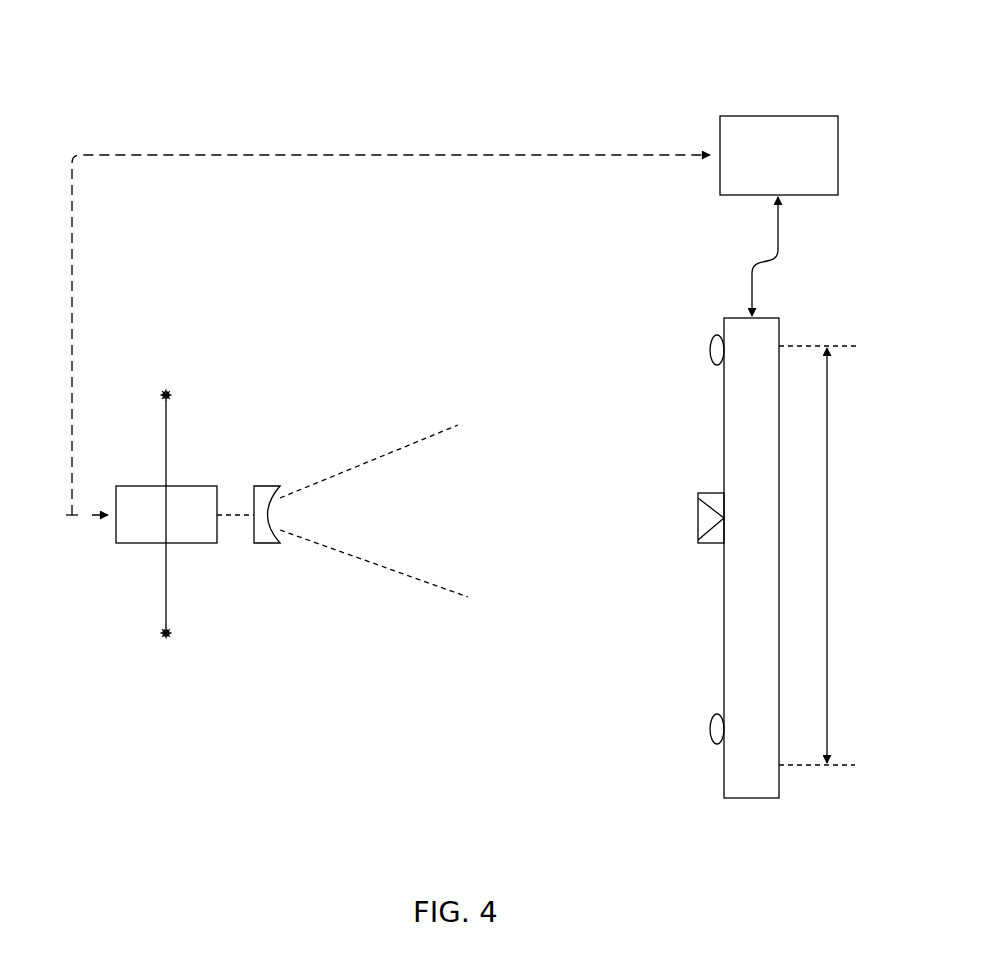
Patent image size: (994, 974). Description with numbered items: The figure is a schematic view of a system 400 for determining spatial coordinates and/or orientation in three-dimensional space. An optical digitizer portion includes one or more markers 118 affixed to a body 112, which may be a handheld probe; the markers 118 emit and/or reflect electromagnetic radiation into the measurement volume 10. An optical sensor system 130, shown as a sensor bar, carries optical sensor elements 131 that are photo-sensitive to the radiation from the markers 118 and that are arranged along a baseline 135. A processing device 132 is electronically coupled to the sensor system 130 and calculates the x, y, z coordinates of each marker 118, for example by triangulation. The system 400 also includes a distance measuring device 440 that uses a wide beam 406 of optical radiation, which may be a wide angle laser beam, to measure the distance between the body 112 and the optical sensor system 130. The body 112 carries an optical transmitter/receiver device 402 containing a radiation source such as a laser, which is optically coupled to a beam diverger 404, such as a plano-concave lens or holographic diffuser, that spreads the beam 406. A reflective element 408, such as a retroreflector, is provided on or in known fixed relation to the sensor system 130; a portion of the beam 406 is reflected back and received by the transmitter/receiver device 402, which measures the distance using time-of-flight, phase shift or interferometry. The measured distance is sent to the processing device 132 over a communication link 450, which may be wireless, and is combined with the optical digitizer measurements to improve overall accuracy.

The system 400 is at (200, 93).
The communication link 450 is at (72, 258).
The distance measuring device 440 is at (299, 390).
The optical transmitter/receiver device 402 is at (192, 486).
The body 112 is at (163, 586).
The markers 118 is at (173, 395).
The beam diverger 404 is at (272, 543).
The wide beam 406 is at (408, 473).
The measurement volume 10 is at (520, 536).
The processing device 132 is at (763, 166).
The optical sensor system 130 is at (725, 318).
The optical sensor elements 131 is at (712, 337).
The baseline 135 is at (827, 470).
The reflective element 408 is at (698, 493).